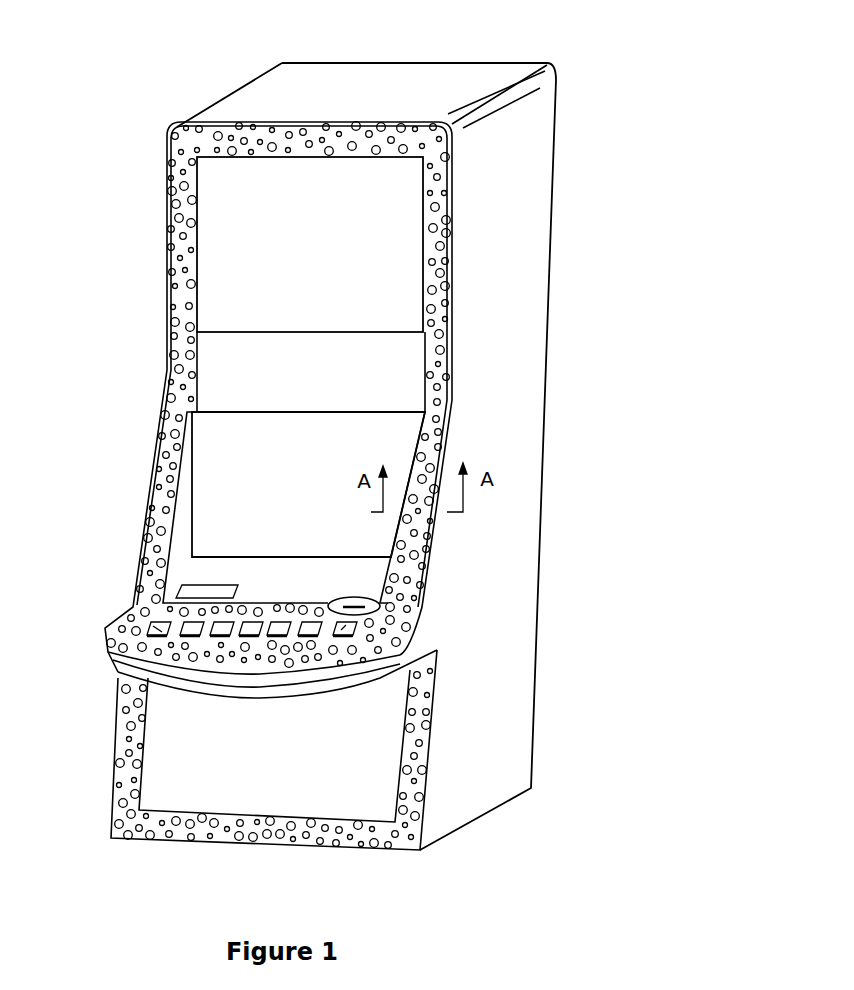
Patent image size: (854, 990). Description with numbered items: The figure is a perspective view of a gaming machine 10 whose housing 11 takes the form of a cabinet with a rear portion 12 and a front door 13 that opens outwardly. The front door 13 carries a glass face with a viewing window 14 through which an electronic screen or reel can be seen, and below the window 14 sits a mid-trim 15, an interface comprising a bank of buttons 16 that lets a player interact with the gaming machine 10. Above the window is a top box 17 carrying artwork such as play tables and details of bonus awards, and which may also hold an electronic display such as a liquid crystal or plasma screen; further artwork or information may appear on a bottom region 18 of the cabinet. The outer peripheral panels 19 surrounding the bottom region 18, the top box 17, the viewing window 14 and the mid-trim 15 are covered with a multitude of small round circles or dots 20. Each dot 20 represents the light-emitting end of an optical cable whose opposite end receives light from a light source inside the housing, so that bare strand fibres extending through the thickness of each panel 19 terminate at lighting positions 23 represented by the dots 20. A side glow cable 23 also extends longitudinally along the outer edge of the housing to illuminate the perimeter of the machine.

The gaming machine 10 is at (606, 320).
The housing 11 is at (500, 98).
The rear portion 12 is at (531, 137).
The front door 13 is at (263, 350).
The viewing window 14 is at (390, 422).
The mid-trim 15 is at (126, 661).
The bank of buttons 16 is at (136, 608).
The top box 17 is at (380, 182).
The bottom region 18 is at (368, 758).
The outer peripheral panels 19 is at (325, 138).
The dots 20 is at (202, 138).
The lighting positions 23 is at (166, 153).